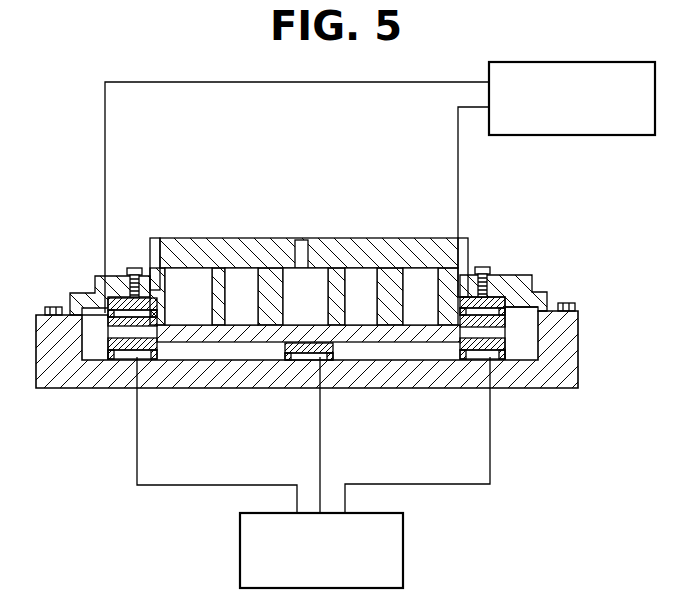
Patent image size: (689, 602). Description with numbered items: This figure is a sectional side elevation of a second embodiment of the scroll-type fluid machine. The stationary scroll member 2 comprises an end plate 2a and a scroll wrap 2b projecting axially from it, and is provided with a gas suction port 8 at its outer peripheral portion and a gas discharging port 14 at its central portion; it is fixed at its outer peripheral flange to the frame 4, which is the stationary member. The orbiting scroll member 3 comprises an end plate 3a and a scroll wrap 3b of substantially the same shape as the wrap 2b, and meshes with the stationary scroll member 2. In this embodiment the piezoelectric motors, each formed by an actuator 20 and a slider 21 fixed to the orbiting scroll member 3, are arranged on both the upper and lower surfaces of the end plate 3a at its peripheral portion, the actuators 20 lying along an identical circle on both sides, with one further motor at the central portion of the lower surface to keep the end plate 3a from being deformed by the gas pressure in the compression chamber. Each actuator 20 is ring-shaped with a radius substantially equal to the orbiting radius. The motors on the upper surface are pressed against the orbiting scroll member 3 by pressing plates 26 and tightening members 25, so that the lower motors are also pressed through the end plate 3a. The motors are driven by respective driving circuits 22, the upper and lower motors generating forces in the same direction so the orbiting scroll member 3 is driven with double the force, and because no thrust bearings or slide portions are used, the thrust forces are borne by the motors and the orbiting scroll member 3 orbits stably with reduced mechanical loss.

The stationary scroll member 2 is at (455, 197).
The end plate 2a is at (422, 268).
The scroll wrap 2b is at (397, 297).
The orbiting scroll member 3 is at (265, 197).
The end plate 3a is at (229, 316).
The scroll wrap 3b is at (265, 273).
The frame 4 is at (220, 390).
The gas suction port 8 is at (170, 243).
The gas discharging port 14 is at (303, 244).
The actuators 20 is at (108, 317).
The sliders 21 is at (75, 302).
The driving circuit 22 is at (598, 137).
The tightening members 25 is at (485, 267).
The pressing plates 26 is at (495, 300).